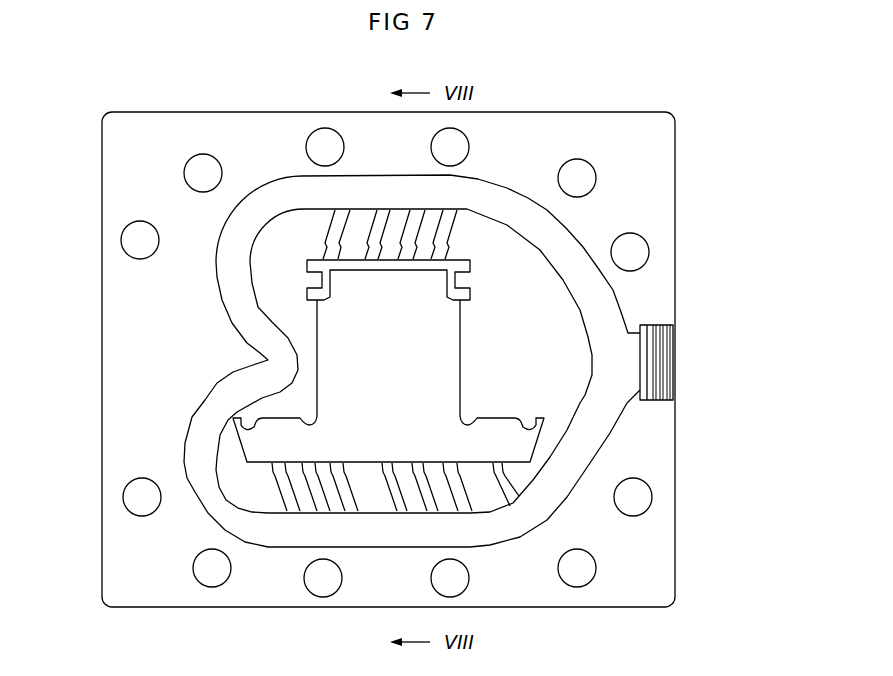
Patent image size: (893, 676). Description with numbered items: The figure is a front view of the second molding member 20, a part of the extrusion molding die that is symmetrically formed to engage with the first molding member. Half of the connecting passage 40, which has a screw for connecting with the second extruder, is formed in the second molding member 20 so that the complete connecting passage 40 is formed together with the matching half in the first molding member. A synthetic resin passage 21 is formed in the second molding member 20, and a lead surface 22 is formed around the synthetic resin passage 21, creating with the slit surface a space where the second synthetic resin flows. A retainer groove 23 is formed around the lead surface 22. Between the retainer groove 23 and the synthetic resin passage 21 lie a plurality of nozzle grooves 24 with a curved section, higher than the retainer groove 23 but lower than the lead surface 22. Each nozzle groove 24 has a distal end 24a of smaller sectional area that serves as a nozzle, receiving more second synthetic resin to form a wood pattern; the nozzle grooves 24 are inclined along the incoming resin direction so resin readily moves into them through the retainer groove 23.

The second molding member 20 is at (122, 178).
The synthetic resin passage 21 is at (320, 441).
The lead surface 22 is at (568, 400).
The retainer groove 23 is at (215, 402).
The nozzle grooves 24 is at (317, 502).
The distal end 24a is at (272, 467).
The connecting passage 40 is at (660, 356).